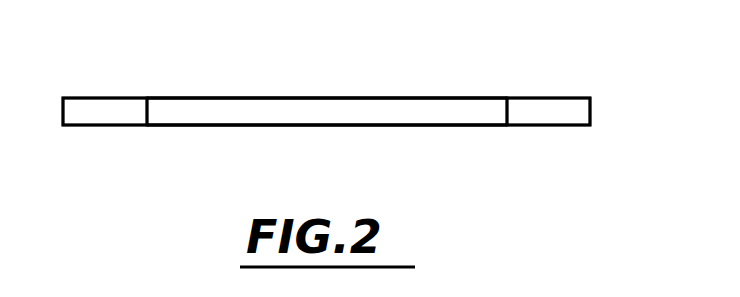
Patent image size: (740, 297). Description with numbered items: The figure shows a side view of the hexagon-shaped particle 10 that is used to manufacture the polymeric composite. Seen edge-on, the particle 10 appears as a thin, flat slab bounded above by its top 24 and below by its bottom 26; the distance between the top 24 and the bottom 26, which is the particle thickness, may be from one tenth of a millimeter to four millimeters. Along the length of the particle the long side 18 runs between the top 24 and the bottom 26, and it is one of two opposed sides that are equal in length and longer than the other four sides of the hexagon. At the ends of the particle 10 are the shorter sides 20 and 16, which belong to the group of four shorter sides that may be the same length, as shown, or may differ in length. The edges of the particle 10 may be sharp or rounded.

The particle 10 is at (568, 64).
The side 16 is at (542, 116).
The side 18 is at (397, 115).
The side 20 is at (111, 118).
The top 24 is at (326, 97).
The bottom 26 is at (327, 127).